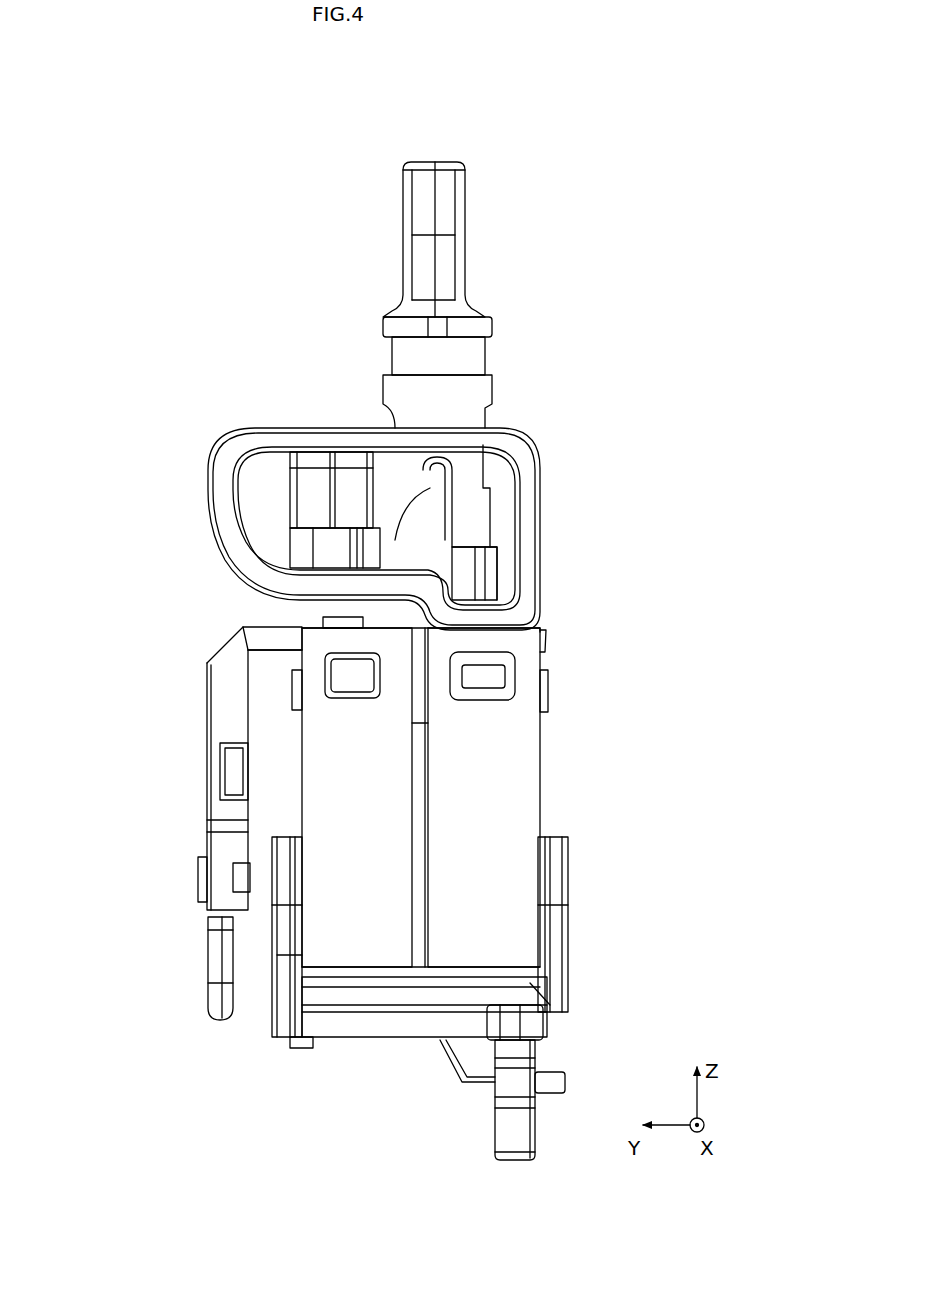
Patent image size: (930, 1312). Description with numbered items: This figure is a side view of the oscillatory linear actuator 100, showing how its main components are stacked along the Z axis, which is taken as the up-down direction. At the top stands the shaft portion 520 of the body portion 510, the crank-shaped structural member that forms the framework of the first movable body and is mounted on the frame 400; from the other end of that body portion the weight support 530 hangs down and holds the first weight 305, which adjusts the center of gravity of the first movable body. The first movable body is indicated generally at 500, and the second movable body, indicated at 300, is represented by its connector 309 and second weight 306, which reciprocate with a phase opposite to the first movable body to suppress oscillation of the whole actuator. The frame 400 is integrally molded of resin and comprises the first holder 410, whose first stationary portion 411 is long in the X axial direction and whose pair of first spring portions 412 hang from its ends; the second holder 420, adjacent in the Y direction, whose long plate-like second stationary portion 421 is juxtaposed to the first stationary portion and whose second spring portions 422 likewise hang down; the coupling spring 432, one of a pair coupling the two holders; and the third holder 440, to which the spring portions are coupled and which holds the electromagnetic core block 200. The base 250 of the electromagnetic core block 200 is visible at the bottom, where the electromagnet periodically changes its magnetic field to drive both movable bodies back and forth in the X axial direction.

The oscillatory linear actuator 100 is at (195, 203).
The electromagnetic core block 200 is at (550, 1160).
The base 250 is at (540, 1045).
The terminal 300 is at (272, 322).
The first weight 305 is at (205, 972).
The second weight 306 is at (315, 492).
The connector 309 is at (315, 553).
The frame 400 is at (590, 690).
The first holder 410 is at (280, 770).
The first stationary portion 411 is at (323, 645).
The first spring portions 412 is at (345, 728).
The second holder 420 is at (578, 793).
The second stationary portion 421 is at (513, 640).
The second spring portions 422 is at (510, 770).
The coupling spring 432 is at (535, 490).
The third holder 440 is at (545, 925).
The holder 500 is at (178, 665).
The body portion 510 is at (265, 642).
The shaft portion 520 is at (435, 190).
The weight support 530 is at (215, 698).